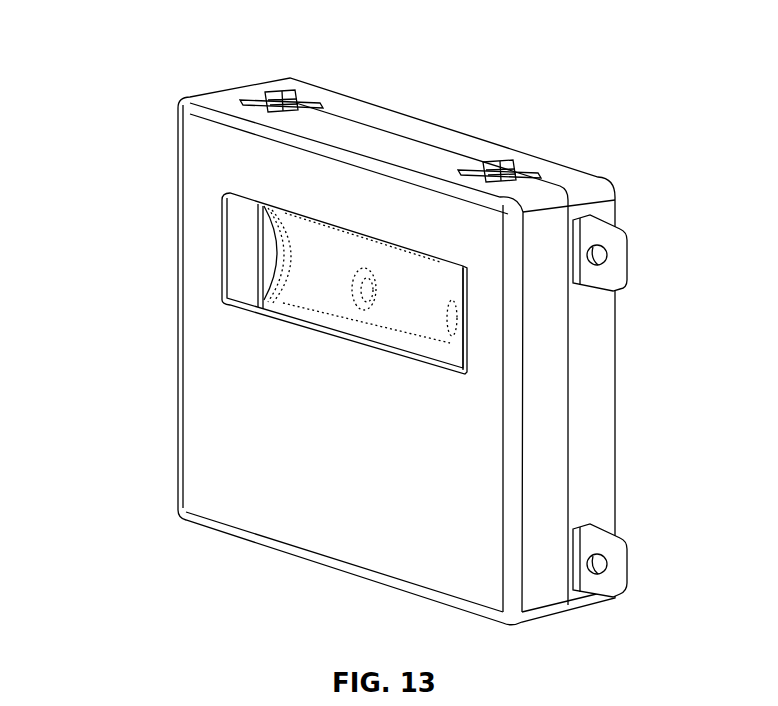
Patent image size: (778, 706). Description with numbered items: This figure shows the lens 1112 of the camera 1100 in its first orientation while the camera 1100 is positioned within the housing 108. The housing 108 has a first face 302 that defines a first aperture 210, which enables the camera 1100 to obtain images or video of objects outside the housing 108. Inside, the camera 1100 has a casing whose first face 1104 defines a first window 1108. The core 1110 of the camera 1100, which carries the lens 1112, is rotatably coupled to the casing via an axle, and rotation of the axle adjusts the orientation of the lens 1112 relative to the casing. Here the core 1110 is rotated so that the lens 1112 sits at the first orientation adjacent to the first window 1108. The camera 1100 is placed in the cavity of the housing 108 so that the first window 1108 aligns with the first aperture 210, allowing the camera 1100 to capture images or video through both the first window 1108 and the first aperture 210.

The housing 108 is at (231, 102).
The first face 302 is at (203, 440).
The first face 1104 is at (242, 212).
The camera 1100 is at (242, 243).
The core 1110 is at (332, 242).
The first window 1108 is at (400, 275).
The first aperture 210 is at (427, 284).
The lens 1112 is at (352, 290).